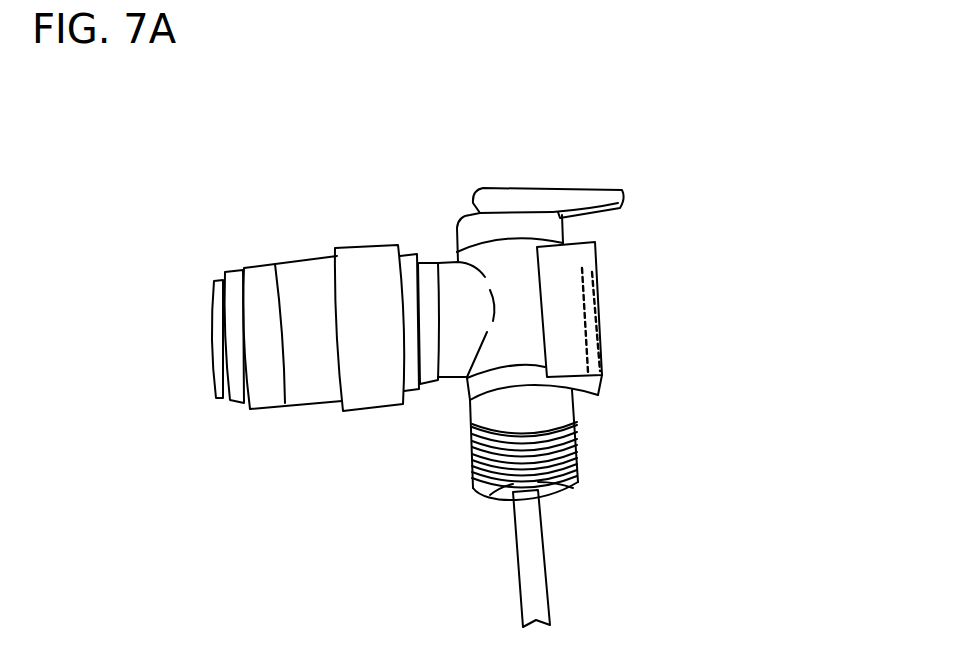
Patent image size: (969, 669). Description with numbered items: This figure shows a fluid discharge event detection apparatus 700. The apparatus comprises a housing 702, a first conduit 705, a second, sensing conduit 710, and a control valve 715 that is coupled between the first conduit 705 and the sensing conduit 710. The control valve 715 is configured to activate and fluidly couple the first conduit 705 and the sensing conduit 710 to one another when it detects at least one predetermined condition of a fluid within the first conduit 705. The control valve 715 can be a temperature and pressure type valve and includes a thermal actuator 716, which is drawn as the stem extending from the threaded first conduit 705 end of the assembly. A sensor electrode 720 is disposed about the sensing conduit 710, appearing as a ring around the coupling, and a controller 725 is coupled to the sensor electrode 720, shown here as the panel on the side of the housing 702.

The fluid discharge event detection apparatus 700 is at (364, 121).
The sensing conduit 710 is at (211, 342).
The sensor electrode 720 is at (362, 250).
The housing 702 is at (427, 268).
The control valve 715 is at (549, 196).
The controller 725 is at (588, 345).
The first conduit 705 is at (548, 494).
The thermal actuator 716 is at (545, 598).